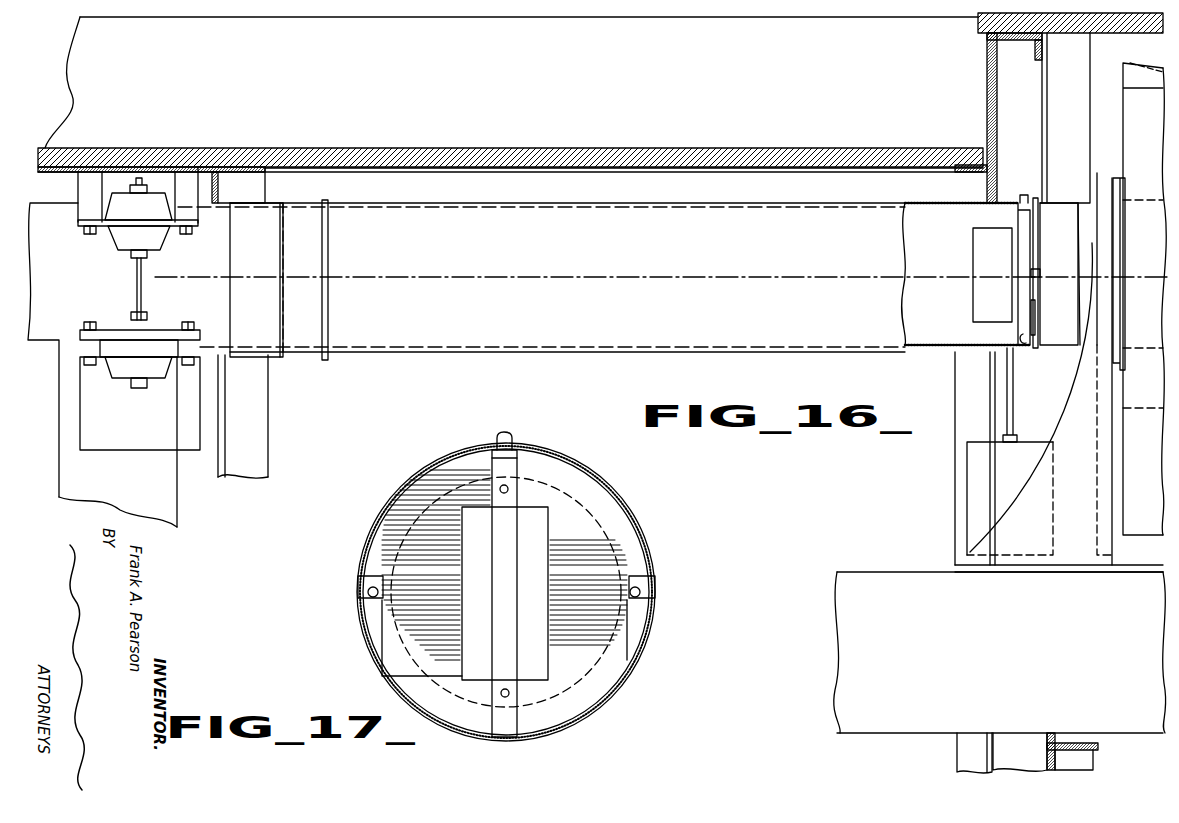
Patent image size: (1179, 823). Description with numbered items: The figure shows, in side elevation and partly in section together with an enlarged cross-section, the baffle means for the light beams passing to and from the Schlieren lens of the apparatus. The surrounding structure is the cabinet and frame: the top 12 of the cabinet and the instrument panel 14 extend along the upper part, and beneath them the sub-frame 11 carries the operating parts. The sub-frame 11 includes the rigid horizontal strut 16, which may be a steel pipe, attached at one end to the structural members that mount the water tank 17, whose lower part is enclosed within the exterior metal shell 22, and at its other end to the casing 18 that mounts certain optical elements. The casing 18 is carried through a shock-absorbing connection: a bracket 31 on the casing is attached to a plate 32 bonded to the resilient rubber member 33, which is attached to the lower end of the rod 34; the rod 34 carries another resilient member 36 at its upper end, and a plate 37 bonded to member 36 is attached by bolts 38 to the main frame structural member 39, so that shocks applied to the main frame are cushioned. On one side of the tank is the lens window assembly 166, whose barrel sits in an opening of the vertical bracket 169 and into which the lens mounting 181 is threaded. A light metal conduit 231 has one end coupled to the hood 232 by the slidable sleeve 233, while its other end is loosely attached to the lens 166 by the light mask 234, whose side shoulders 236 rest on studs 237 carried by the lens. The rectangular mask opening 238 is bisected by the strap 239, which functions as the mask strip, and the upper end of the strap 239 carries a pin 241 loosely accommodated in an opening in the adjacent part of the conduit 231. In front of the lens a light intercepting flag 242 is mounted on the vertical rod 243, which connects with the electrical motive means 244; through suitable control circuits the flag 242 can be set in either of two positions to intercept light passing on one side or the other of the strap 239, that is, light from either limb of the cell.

In FIG. 16, the sub-frame 11 is at (950, 568).
In FIG. 16, the top 12 is at (549, 150).
In FIG. 16, the instrument panel 14 is at (78, 65).
In FIG. 16, the horizontal strut 16 is at (857, 580).
In FIG. 16, the water tank 17 is at (1114, 78).
In FIG. 16, the casing 18 is at (170, 513).
In FIG. 16, the exterior metal shell 22 is at (1138, 528).
In FIG. 16, the bracket 31 is at (85, 397).
In FIG. 16, the plate 32 is at (80, 353).
In FIG. 16, the resilient rubber member 33 is at (158, 372).
In FIG. 16, the rod 34 is at (137, 295).
In FIG. 16, the resilient rubber member 36 is at (122, 238).
In FIG. 16, the plate 37 is at (78, 222).
In FIG. 16, the bolts 38 is at (82, 232).
In FIG. 16, the main frame structural member 39 is at (220, 190).
In FIG. 16, the lens window assembly 166 is at (1065, 198).
In FIG. 17, the lens window assembly 166 is at (571, 480).
In FIG. 16, the vertical bracket 169 is at (1075, 548).
In FIG. 17, the lens mounting 181 is at (625, 540).
In FIG. 16, the light metal conduit 231 is at (698, 212).
In FIG. 17, the light metal conduit 231 is at (418, 482).
In FIG. 16, the hood 232 is at (225, 330).
In FIG. 16, the slidable sleeve 233 is at (305, 337).
In FIG. 16, the light mask 234 is at (1036, 242).
In FIG. 17, the light mask 234 is at (575, 520).
In FIG. 16, the side shoulders 236 is at (1039, 273).
In FIG. 17, the side shoulders 236 is at (362, 582).
In FIG. 16, the studs 237 is at (1032, 275).
In FIG. 17, the studs 237 is at (368, 596).
In FIG. 17, the rectangular mask opening 238 is at (542, 652).
In FIG. 16, the strap 239 is at (1018, 212).
In FIG. 17, the strap 239 is at (494, 693).
In FIG. 16, the pin 241 is at (1027, 198).
In FIG. 17, the pin 241 is at (515, 440).
In FIG. 16, the light intercepting flag 242 is at (975, 262).
In FIG. 16, the vertical rod 243 is at (1013, 410).
In FIG. 16, the electrical motive means 244 is at (975, 497).